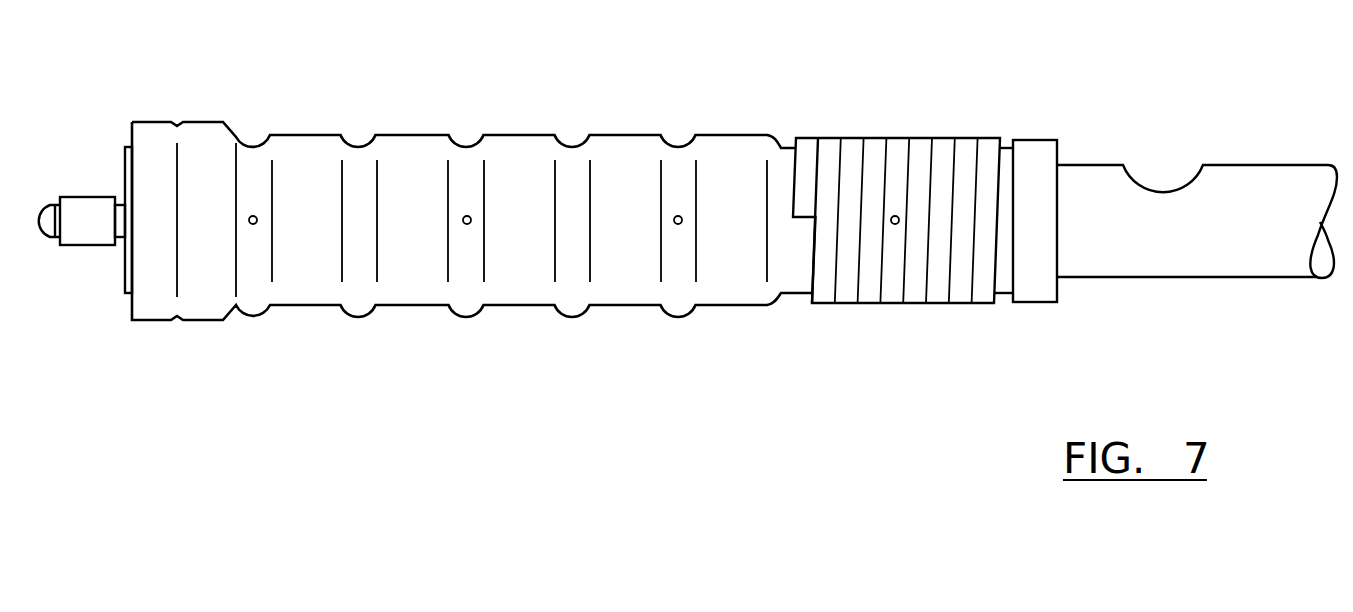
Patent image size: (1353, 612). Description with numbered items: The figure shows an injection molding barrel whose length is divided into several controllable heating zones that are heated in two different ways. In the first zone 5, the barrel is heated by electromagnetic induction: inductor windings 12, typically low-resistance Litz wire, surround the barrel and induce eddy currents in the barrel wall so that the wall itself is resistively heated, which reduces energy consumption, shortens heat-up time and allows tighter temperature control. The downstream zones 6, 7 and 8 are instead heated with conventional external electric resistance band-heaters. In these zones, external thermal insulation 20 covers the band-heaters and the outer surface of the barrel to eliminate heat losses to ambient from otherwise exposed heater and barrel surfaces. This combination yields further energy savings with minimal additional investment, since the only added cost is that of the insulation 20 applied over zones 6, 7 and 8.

The external thermal insulation 20 is at (200, 121).
The inductor windings 12 is at (962, 137).
The heating zone 8 is at (350, 327).
The heating zone 7 is at (365, 327).
The heating zone 6 is at (787, 327).
The heating zone 5 is at (901, 233).